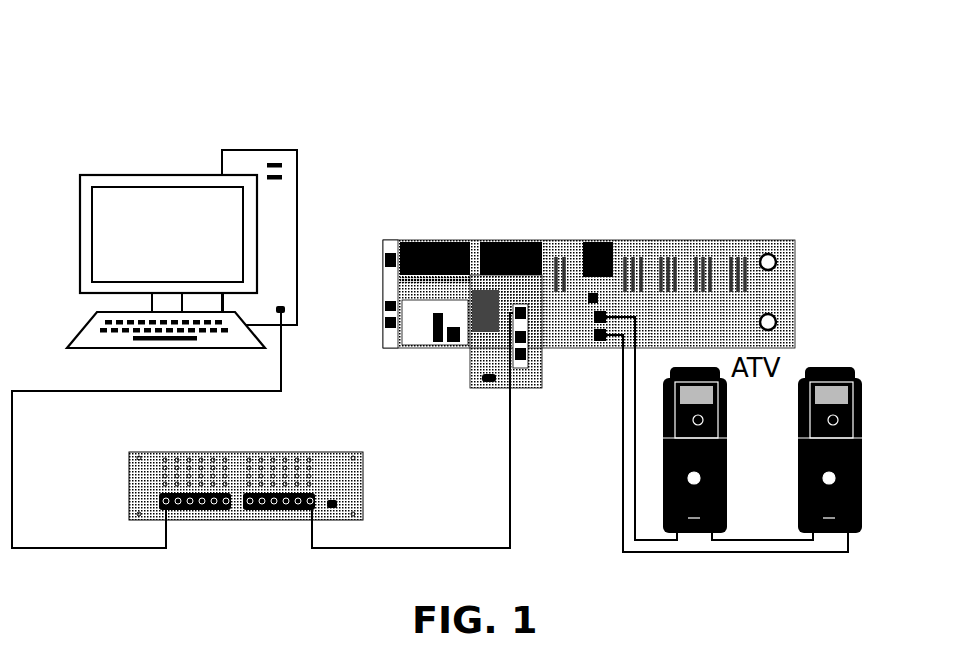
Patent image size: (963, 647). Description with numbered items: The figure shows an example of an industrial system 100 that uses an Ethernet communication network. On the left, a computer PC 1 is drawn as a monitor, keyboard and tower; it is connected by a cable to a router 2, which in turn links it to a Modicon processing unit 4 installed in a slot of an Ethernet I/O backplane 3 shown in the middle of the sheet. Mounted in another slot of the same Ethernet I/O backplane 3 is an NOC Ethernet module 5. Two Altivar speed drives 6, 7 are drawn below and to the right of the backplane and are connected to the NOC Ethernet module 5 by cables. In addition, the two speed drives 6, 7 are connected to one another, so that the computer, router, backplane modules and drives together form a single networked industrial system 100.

The industrial system 100 is at (116, 115).
The computer PC 1 is at (171, 249).
The router 2 is at (216, 477).
The Ethernet I/O backplane 3 is at (575, 281).
The Modicon M580 processing unit 4 is at (520, 242).
The NOC 311 Ethernet module 5 is at (592, 242).
The Altivar speed drive 6 is at (702, 450).
The Altivar speed drive 7 is at (838, 450).